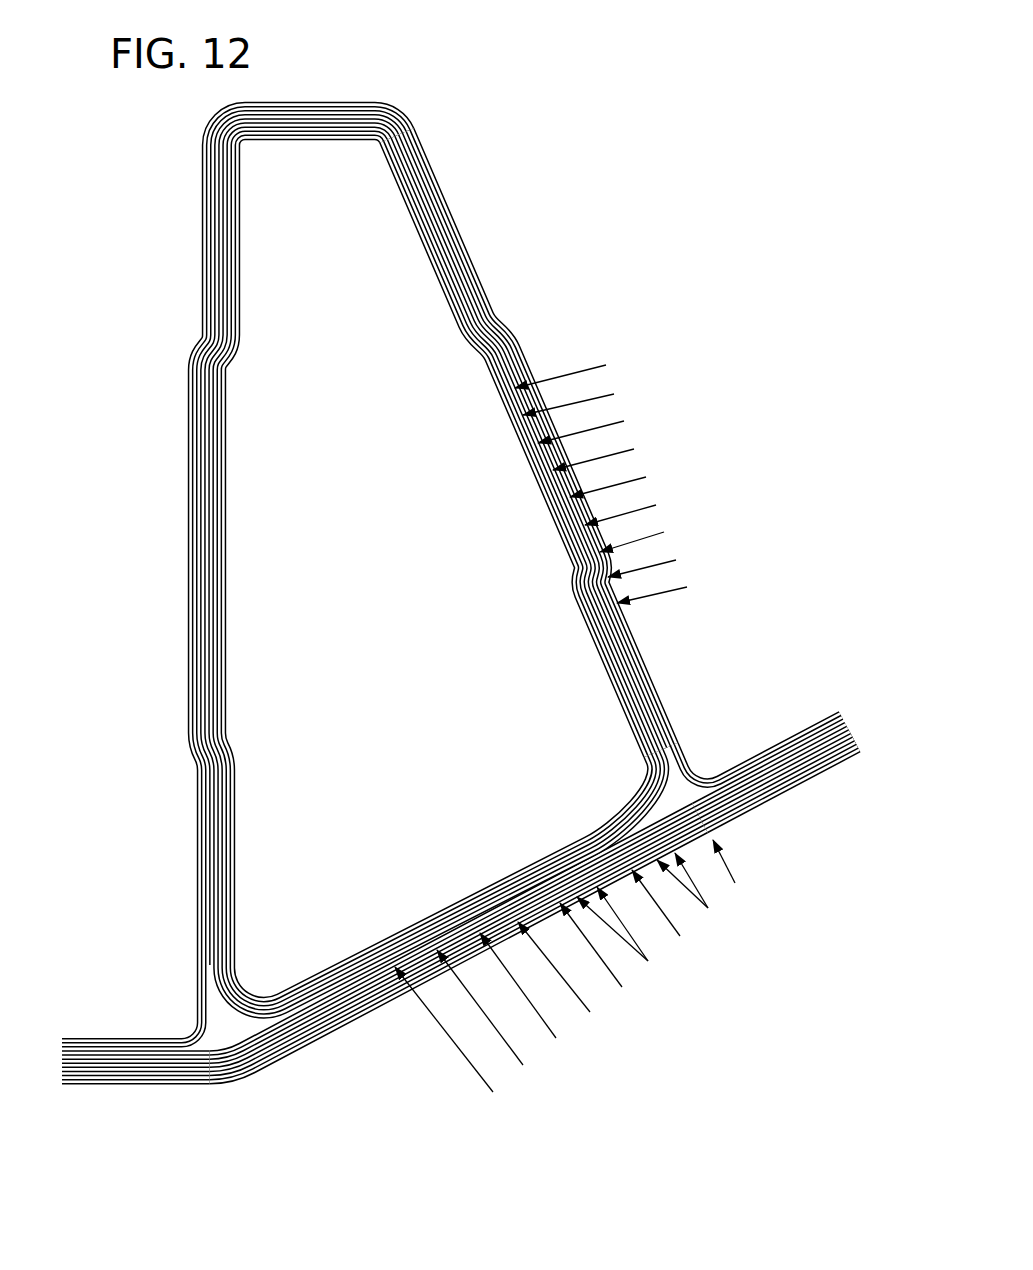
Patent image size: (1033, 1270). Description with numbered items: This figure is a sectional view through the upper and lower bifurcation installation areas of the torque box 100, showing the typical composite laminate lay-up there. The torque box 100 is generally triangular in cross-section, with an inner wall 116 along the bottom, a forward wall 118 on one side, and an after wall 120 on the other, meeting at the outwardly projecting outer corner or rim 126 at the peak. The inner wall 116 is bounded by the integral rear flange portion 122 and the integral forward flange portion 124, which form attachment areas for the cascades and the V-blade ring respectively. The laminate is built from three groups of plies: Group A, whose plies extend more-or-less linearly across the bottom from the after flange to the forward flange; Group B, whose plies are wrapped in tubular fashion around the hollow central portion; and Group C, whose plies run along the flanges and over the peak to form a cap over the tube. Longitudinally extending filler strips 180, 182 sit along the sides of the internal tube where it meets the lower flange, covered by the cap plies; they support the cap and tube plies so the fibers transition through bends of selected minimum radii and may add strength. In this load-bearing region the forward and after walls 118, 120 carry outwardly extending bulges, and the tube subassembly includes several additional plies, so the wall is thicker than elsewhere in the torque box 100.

The torque box 100 is at (506, 198).
The inner wall 116 is at (388, 1012).
The forward wall 118 is at (197, 441).
The after wall 120 is at (524, 365).
The rear flange portion 122 is at (795, 745).
The forward flange portion 124 is at (95, 1048).
The outer corner or rim 126 is at (337, 104).
The filler strip 180 is at (212, 1025).
The filler strip 182 is at (688, 790).
The Group A is at (245, 1072).
The Group B is at (258, 982).
The Group C is at (191, 1012).